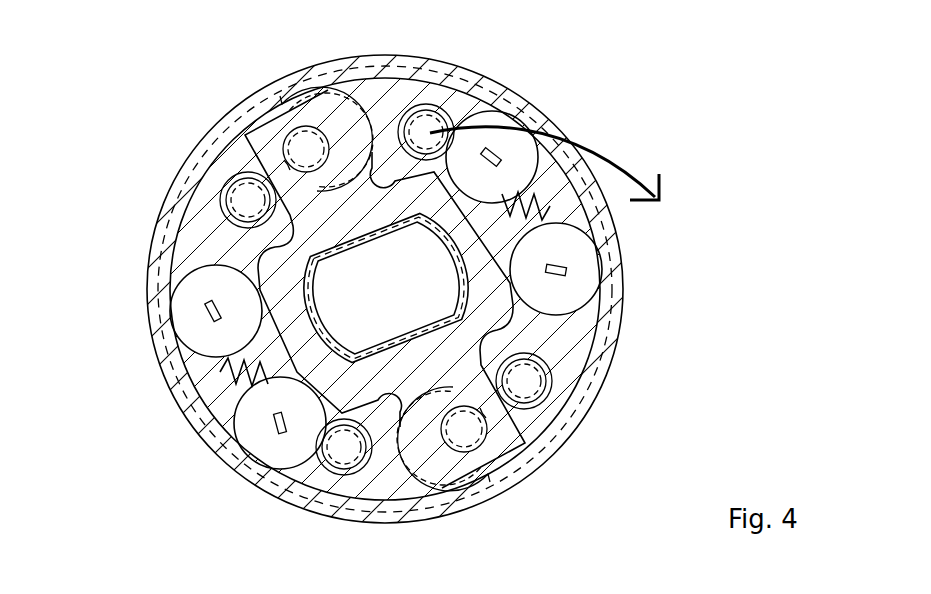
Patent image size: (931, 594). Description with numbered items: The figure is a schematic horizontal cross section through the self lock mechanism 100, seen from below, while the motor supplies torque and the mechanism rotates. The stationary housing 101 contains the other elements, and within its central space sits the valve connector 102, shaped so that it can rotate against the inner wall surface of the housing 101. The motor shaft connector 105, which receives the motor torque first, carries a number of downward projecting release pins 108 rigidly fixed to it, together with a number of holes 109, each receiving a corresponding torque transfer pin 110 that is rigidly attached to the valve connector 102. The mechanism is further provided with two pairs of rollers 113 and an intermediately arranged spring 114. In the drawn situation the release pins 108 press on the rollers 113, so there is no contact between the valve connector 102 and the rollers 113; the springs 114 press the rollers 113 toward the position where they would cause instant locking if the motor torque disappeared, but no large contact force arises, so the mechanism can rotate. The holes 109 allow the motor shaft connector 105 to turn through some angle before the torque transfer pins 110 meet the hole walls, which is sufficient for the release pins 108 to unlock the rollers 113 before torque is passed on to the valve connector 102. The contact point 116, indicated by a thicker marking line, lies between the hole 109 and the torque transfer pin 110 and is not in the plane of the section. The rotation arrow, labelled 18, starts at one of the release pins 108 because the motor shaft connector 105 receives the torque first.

The self lock mechanism 100 is at (136, 486).
The housing 101 is at (452, 189).
The valve connector 102 is at (508, 205).
The motor shaft connector 105 is at (560, 337).
The release pins 108 is at (243, 198).
The holes 109 is at (353, 117).
The torque transfer pins 110 is at (305, 148).
The rollers 113 is at (178, 312).
The spring 114 is at (233, 380).
The contact point 116 is at (282, 162).
The rotation direction arrow 18 is at (554, 173).